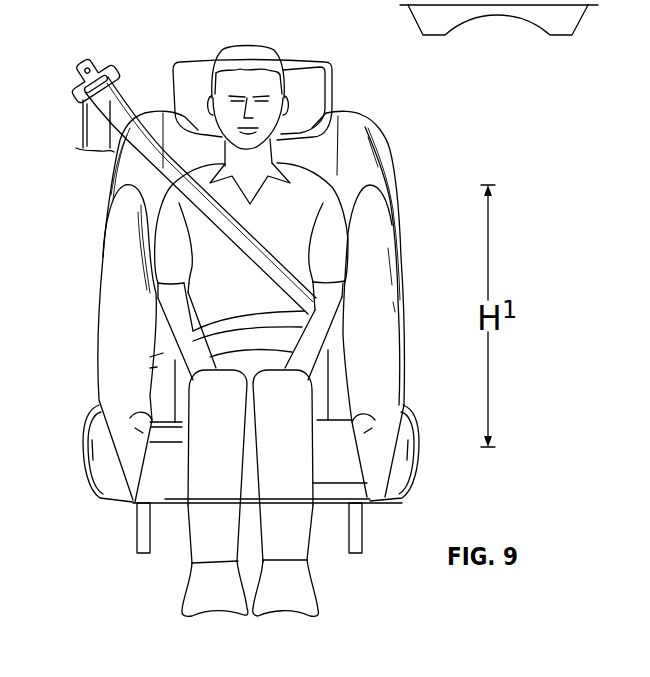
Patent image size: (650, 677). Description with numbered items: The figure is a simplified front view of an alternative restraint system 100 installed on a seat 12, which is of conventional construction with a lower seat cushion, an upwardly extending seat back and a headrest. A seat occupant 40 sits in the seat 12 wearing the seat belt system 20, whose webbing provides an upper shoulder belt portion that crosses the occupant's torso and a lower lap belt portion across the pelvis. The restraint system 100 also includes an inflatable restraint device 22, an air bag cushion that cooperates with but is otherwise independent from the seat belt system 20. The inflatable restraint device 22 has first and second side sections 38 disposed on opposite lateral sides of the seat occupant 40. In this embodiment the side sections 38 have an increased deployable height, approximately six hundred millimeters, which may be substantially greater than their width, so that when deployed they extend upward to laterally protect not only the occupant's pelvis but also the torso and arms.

The seat 12 is at (388, 136).
The seat belt system 20 is at (125, 89).
The inflatable restraint device 22 is at (406, 245).
The side sections 38 is at (99, 297).
The seat occupant 40 is at (236, 43).
The restraint system 100 is at (327, 293).